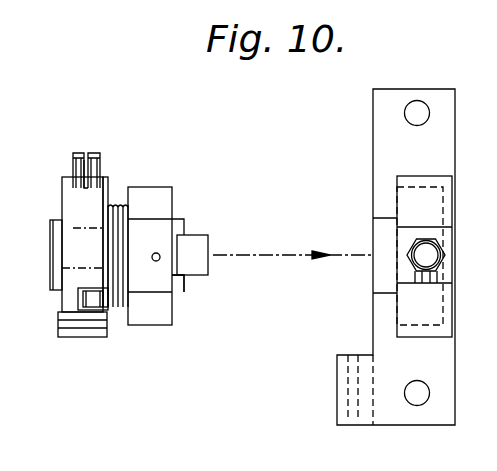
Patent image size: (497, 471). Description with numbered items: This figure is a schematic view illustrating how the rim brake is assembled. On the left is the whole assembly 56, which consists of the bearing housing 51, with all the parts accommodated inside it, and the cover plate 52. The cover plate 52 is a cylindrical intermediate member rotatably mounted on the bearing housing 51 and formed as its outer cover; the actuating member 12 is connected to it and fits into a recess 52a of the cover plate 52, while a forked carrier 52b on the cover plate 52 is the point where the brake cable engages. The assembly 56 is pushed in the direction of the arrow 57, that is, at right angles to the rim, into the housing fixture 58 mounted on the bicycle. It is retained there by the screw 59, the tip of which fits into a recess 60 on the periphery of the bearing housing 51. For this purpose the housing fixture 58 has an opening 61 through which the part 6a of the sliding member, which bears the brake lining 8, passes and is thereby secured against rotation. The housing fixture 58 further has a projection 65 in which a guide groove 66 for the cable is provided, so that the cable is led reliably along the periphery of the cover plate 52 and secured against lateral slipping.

The cover plate 52 is at (63, 203).
The forked carrier 52b is at (86, 190).
The recess 52a is at (79, 303).
The actuating member 12 is at (107, 308).
The assembly 56 is at (136, 175).
The bearing housing 51 is at (162, 187).
The recess 60 is at (159, 254).
The brake lining 8 is at (208, 244).
The part of the sliding member 6a is at (183, 288).
The arrow 57 is at (264, 255).
The housing fixture 58 is at (365, 172).
The opening 61 is at (447, 222).
The screw 59 is at (410, 267).
The projection 65 is at (340, 365).
The guide groove 66 is at (348, 398).